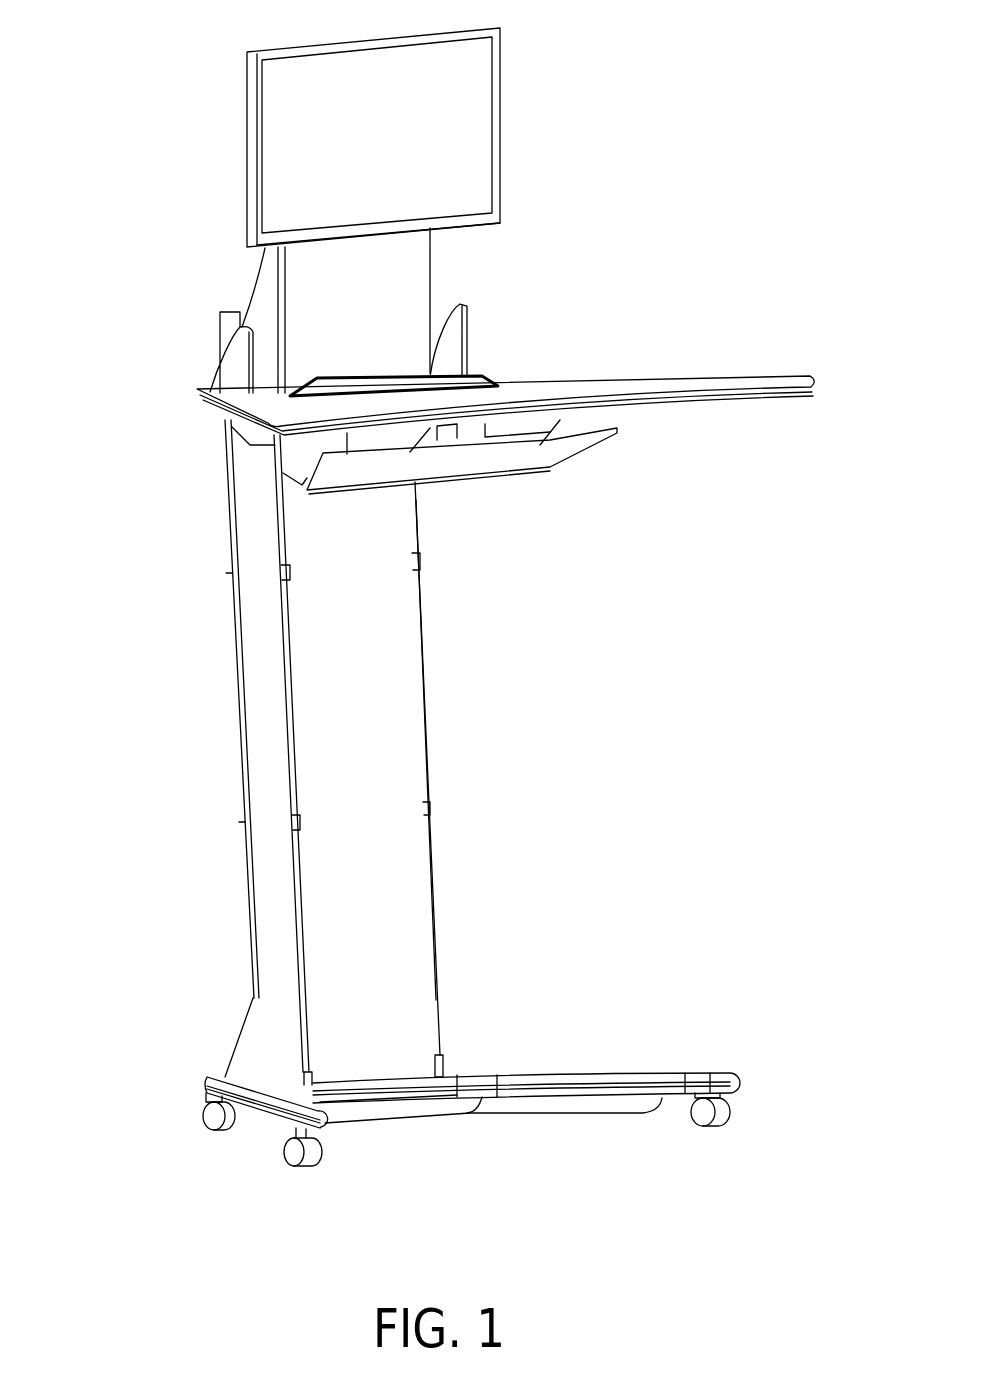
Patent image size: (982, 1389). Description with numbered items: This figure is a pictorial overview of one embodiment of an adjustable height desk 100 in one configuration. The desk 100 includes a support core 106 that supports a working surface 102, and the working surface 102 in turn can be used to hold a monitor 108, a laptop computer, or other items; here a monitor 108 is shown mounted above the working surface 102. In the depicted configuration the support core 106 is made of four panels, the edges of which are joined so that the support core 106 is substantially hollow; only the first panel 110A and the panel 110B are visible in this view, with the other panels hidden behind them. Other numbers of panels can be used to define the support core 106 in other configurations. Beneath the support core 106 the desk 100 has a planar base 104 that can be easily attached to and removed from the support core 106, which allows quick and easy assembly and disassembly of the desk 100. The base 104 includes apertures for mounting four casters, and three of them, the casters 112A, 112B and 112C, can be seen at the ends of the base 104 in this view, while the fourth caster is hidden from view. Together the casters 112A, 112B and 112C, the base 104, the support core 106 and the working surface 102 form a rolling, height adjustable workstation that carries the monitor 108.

The adjustable height desk 100 is at (703, 294).
The working surface 102 is at (731, 417).
The planar base 104 is at (587, 1059).
The support core 106 is at (443, 720).
The monitor 108 is at (520, 112).
The first panel 110A is at (257, 745).
The panel 110B is at (375, 610).
The caster 112A is at (205, 1101).
The caster 112B is at (283, 1160).
The caster 112C is at (703, 1120).